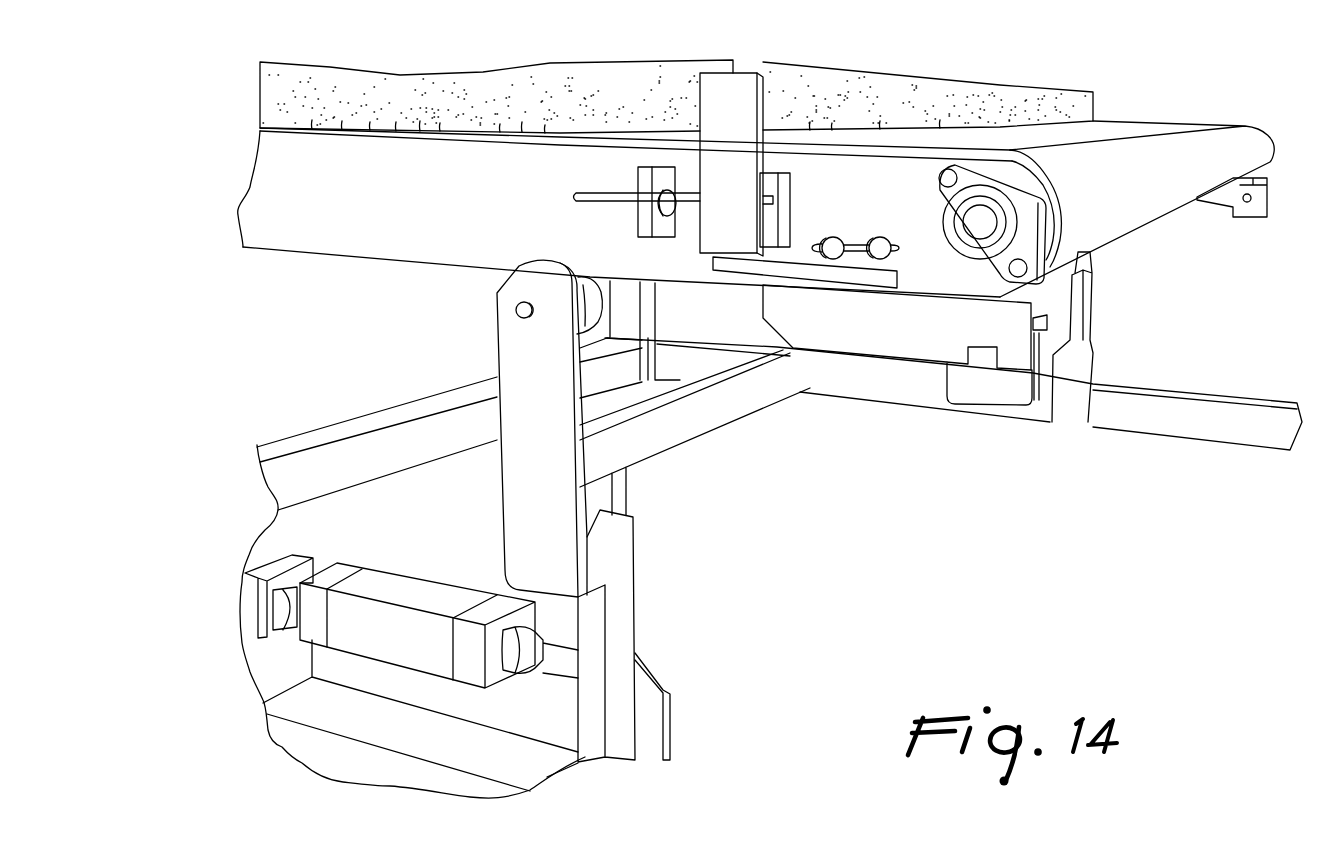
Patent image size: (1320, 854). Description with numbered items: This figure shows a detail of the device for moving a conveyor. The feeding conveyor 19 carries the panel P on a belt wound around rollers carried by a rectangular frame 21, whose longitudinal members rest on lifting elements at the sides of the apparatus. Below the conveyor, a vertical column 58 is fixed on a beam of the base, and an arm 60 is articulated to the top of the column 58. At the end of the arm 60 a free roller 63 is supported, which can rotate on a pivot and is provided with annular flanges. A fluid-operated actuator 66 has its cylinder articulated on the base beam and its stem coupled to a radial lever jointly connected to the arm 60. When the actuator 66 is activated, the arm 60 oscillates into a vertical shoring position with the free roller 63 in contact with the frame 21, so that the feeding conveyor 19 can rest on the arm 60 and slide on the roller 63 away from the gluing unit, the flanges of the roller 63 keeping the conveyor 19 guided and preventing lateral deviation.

The panel P is at (287, 93).
The rectangular frame 21 is at (307, 220).
The feeding conveyor 19 is at (1174, 128).
The free roller 63 is at (585, 281).
The arm 60 is at (513, 343).
The fluid-operated actuator 66 is at (403, 617).
The vertical column 58 is at (623, 602).